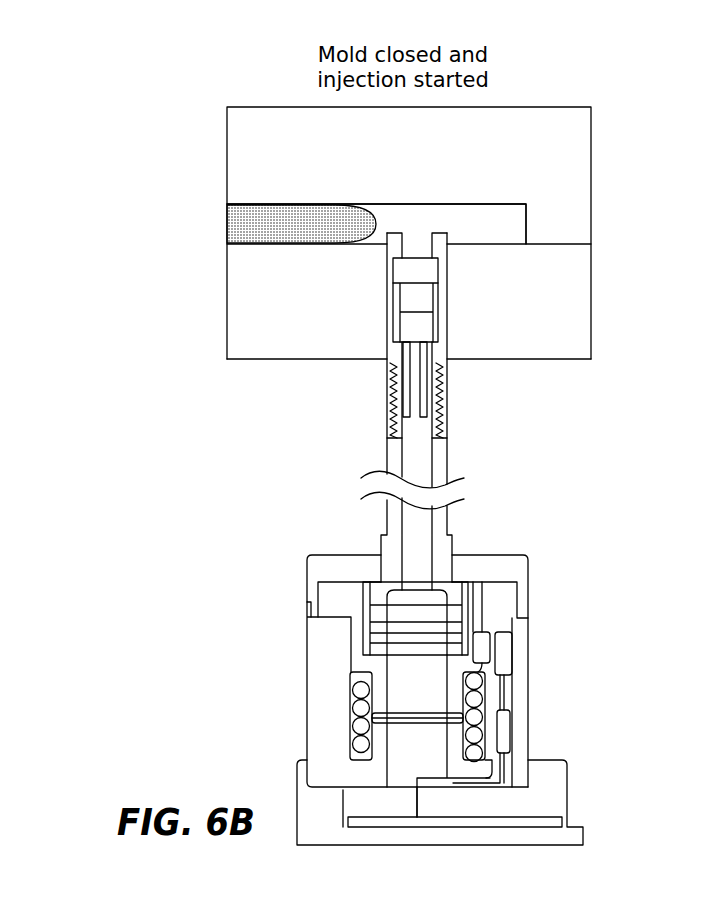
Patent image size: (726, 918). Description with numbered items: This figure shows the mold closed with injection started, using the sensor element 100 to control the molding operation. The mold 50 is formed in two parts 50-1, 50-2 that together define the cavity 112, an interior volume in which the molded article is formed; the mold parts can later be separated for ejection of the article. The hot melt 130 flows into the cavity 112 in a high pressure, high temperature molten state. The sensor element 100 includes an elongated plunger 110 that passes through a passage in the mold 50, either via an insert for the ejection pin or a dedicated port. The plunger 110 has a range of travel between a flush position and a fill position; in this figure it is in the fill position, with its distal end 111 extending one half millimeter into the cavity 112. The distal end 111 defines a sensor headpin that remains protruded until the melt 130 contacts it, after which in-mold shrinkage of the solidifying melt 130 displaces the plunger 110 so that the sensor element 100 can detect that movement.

The mold 50 is at (212, 312).
The first mold part 50-1 is at (568, 303).
The second mold part 50-2 is at (568, 170).
The sensor element 100 is at (278, 672).
The elongated plunger 110 is at (410, 397).
The distal end 111 is at (417, 228).
The cavity 112 is at (513, 237).
The melt 130 is at (245, 218).